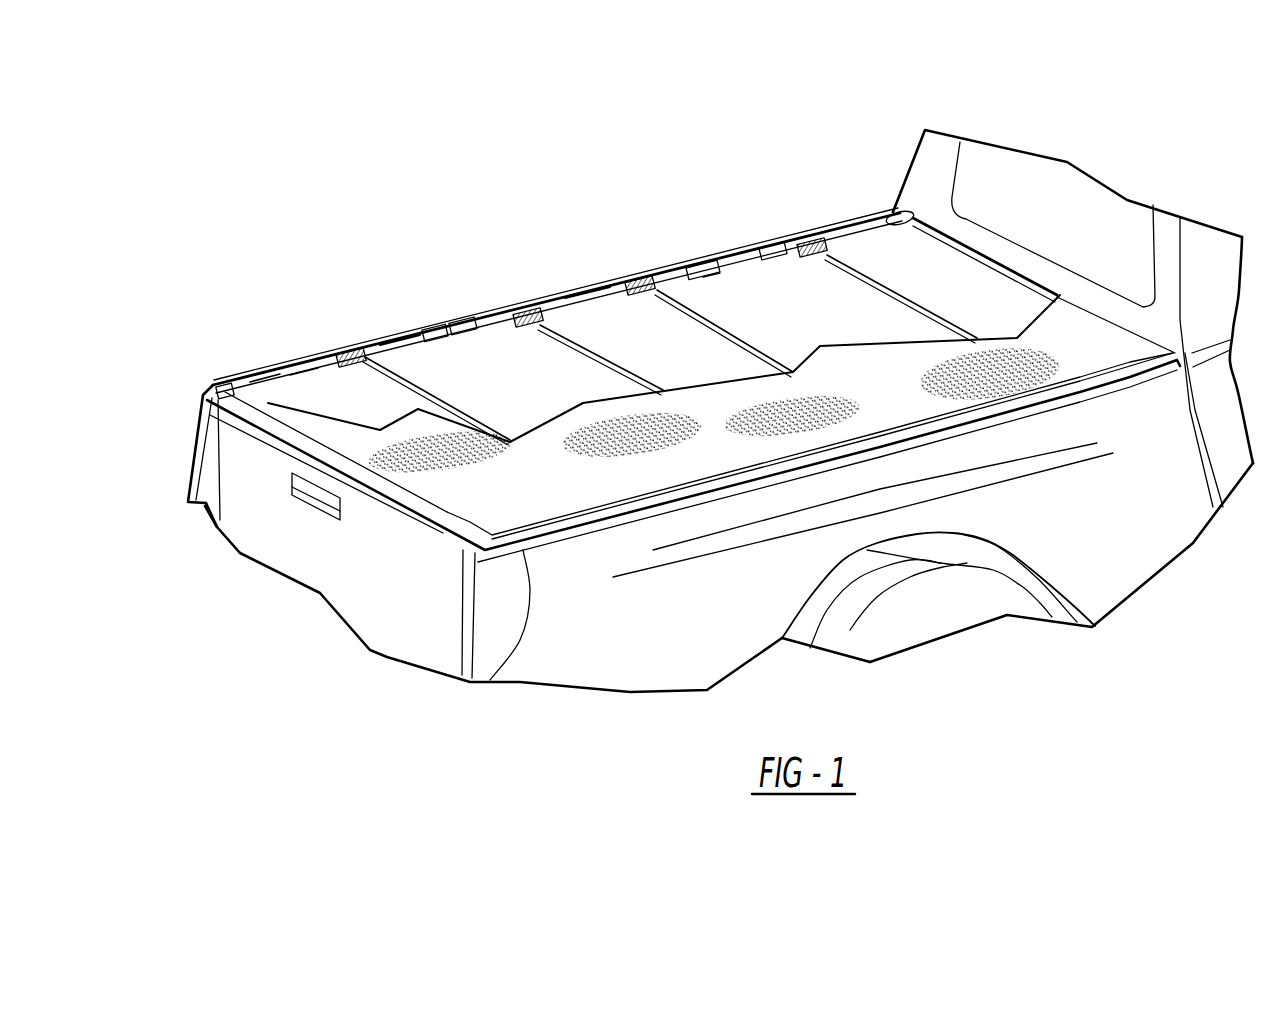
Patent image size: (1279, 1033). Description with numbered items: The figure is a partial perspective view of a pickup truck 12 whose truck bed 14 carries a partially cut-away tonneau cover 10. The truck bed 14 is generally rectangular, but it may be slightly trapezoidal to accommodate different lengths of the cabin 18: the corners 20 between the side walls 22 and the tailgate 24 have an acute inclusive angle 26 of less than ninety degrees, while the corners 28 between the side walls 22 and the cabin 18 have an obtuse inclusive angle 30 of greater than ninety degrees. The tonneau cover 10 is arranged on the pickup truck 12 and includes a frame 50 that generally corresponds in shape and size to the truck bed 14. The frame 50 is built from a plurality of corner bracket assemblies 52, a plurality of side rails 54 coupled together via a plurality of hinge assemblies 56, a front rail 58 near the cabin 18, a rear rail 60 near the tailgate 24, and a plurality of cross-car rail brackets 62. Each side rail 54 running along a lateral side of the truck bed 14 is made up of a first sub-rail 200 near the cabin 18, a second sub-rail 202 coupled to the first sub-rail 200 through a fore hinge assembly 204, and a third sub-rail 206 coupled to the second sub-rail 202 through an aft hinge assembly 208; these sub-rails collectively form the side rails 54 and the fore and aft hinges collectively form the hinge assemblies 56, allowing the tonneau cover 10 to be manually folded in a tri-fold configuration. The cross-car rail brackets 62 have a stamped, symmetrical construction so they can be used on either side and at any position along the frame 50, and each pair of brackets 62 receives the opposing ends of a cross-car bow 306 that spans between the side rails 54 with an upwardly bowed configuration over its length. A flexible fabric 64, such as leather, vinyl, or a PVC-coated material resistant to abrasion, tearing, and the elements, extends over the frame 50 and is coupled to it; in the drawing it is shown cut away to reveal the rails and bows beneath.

The tonneau cover 10 is at (398, 252).
The pickup truck 12 is at (1117, 148).
The truck bed 14 is at (618, 287).
The cabin 18 is at (1212, 280).
The corners 20 is at (184, 420).
The side walls 22 is at (503, 317).
The tailgate 24 is at (368, 487).
The acute inclusive angle 26 is at (282, 385).
The corners 28 is at (847, 228).
The obtuse inclusive angle 30 is at (935, 246).
The frame 50 is at (263, 372).
The corner bracket assemblies 52 is at (230, 382).
The side rails 54 is at (295, 376).
The hinge assemblies 56 is at (447, 333).
The front rail 58 is at (963, 250).
The rear rail 60 is at (220, 522).
The cross-car rail brackets 62 is at (353, 350).
The flexible fabric 64 is at (687, 421).
The first sub-rail 200 is at (733, 257).
The second sub-rail 202 is at (587, 287).
The fore hinge assembly 204 is at (703, 273).
The third sub-rail 206 is at (400, 337).
The aft hinge assembly 208 is at (447, 340).
The cross-car bow 306 is at (490, 403).